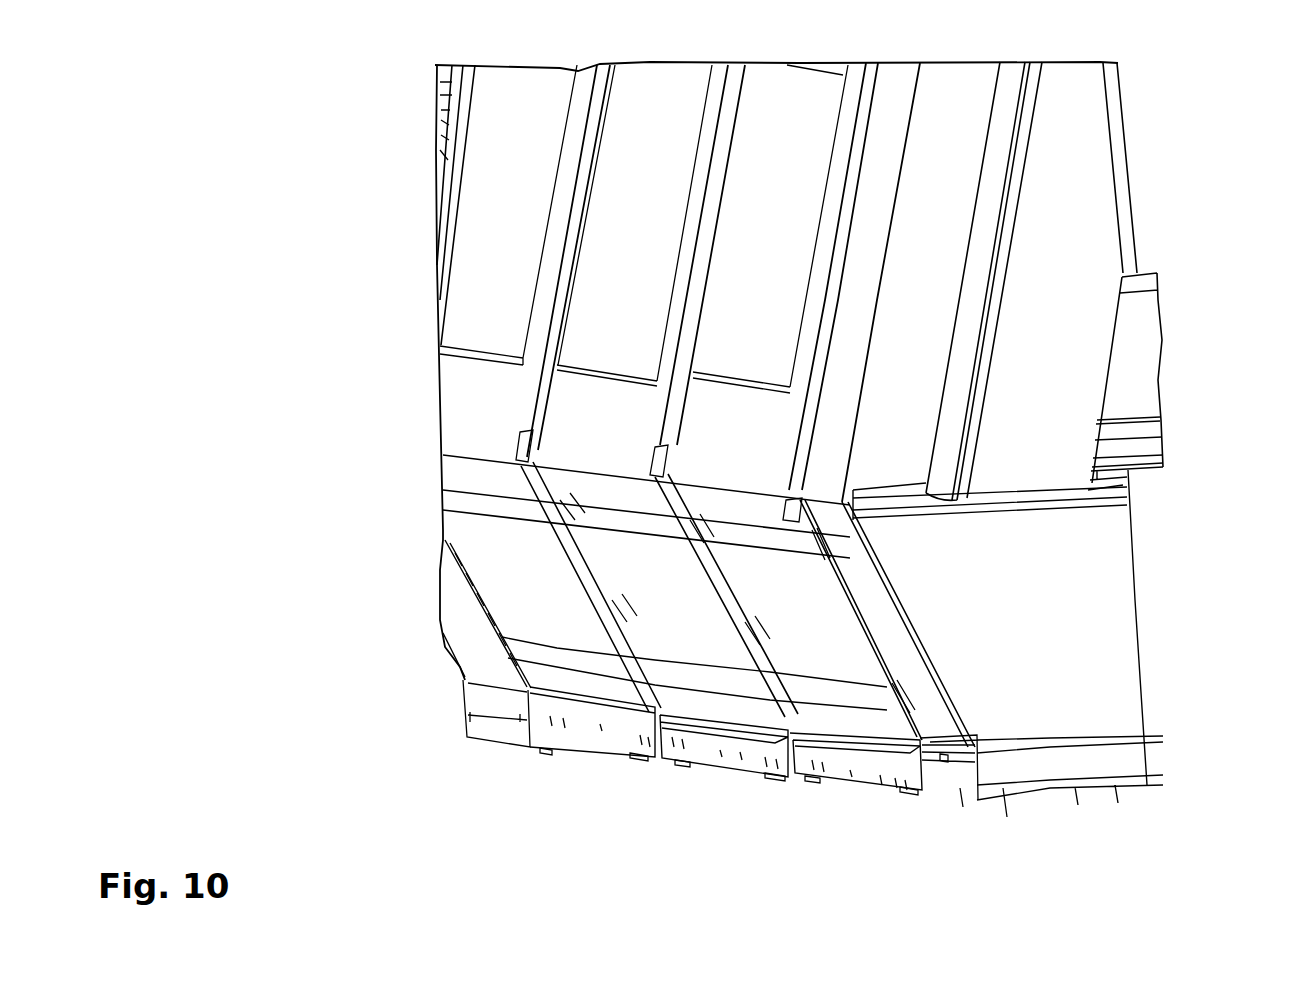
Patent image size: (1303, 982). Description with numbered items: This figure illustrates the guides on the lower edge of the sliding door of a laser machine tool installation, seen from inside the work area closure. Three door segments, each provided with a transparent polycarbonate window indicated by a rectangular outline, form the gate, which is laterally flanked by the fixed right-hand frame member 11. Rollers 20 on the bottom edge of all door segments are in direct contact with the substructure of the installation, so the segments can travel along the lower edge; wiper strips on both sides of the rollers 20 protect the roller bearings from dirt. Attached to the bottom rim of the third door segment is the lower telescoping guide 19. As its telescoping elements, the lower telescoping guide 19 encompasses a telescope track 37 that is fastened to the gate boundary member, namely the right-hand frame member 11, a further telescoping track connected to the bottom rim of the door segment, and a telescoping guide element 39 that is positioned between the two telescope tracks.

The right-hand frame member 11 is at (943, 202).
The lower telescoping guide 19 is at (976, 734).
The rollers 20 is at (810, 778).
The telescope track 37 is at (977, 757).
The telescoping guide element 39 is at (930, 755).